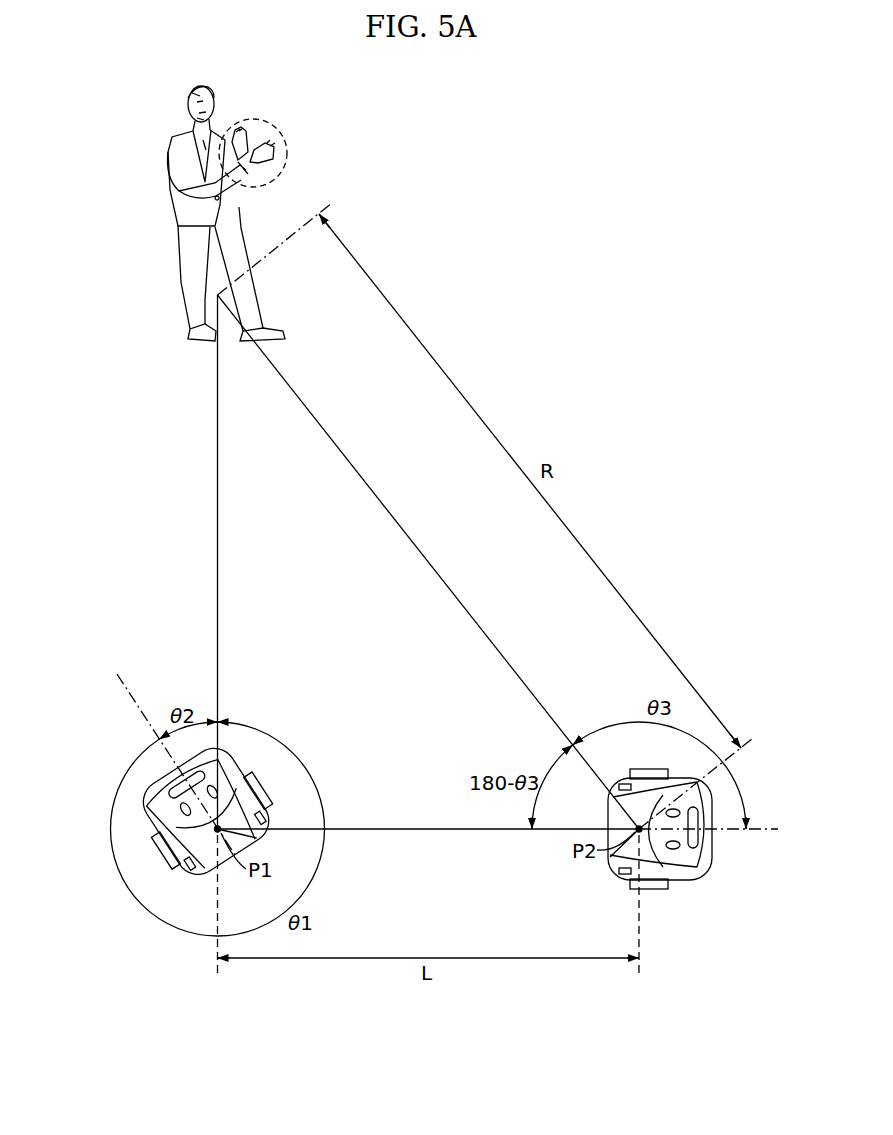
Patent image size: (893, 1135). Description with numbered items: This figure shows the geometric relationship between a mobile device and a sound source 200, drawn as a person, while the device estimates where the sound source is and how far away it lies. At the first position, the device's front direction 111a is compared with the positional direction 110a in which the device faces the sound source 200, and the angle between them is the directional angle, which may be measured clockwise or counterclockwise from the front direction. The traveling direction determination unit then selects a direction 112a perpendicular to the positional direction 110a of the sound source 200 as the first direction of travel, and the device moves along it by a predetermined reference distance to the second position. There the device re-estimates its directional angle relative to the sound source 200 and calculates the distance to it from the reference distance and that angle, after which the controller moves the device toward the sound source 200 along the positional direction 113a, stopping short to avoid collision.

The sound source 200 is at (172, 138).
The positional direction of the sound source 110a is at (218, 587).
The front direction of the mobile device 111a is at (120, 690).
The direction perpendicular to the positional direction of the sound source 112a is at (410, 828).
The positional direction of the sound source at the second position 113a is at (394, 518).